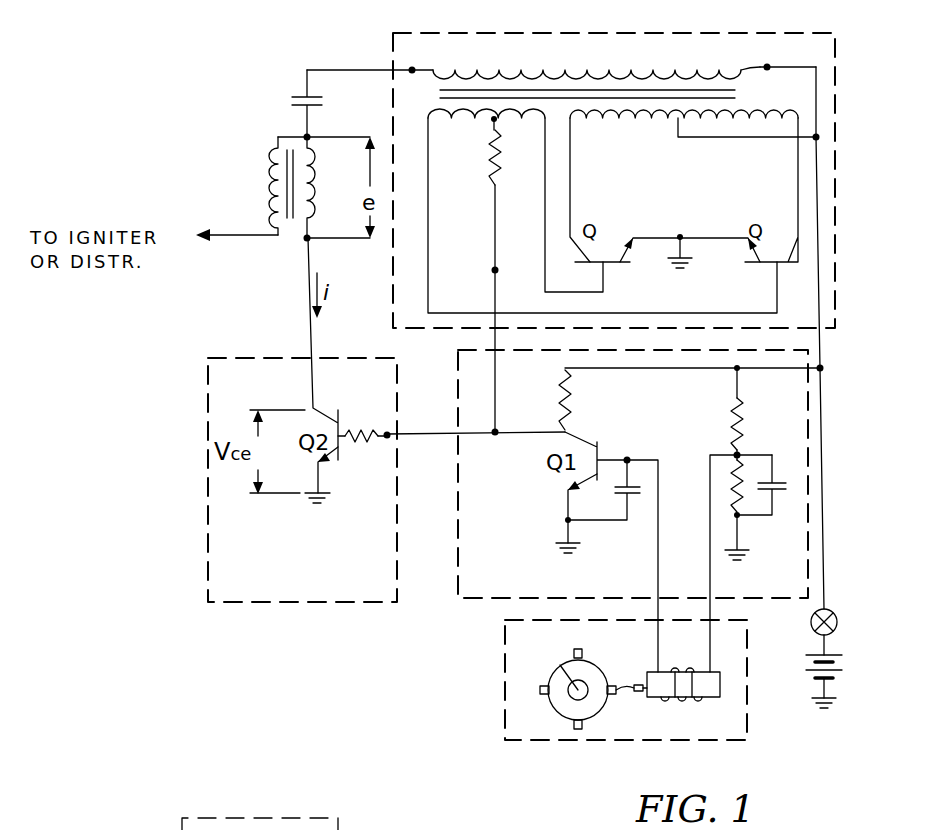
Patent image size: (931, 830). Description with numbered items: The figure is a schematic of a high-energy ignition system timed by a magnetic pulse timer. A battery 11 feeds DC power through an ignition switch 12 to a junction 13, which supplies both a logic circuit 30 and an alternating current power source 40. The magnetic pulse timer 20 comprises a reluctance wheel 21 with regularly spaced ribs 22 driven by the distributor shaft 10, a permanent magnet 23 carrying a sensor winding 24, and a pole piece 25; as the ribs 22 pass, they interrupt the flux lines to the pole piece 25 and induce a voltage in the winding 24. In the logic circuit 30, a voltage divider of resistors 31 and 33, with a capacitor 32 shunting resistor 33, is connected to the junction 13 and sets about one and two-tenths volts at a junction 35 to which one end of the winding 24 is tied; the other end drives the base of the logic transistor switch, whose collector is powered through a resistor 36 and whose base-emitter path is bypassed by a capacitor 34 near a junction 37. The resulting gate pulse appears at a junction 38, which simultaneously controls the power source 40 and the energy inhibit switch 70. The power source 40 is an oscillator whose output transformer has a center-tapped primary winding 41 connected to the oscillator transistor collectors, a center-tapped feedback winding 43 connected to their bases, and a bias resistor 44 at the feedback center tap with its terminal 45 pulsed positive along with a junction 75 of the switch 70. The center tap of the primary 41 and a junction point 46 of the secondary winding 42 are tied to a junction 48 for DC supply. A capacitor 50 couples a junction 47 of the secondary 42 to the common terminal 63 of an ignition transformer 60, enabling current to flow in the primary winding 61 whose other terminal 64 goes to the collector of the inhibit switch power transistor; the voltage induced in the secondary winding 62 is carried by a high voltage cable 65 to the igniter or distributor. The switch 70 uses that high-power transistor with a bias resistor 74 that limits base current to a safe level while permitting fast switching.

The distributor shaft 10 is at (568, 666).
The battery 11 is at (810, 656).
The ignition switch 12 is at (810, 622).
The junction 13 is at (830, 372).
The magnetic pulse timer 20 is at (762, 728).
The reluctance wheel 21 is at (562, 704).
The ribs 22 is at (584, 726).
The permanent magnet 23 is at (708, 698).
The sensor winding 24 is at (664, 700).
The pole piece 25 is at (638, 684).
The logic circuit 30 is at (450, 590).
The resistor 31 is at (734, 410).
The capacitor 32 is at (778, 480).
The resistor 33 is at (735, 486).
The capacitor 34 is at (636, 496).
The junction 35 is at (736, 454).
The resistor 36 is at (573, 400).
The junction 37 is at (627, 458).
The junction 38 is at (498, 436).
The alternating current power source 40 is at (378, 49).
The primary winding 41 is at (630, 120).
The secondary winding 42 is at (536, 76).
The feedback winding 43 is at (470, 120).
The bias resistor 44 is at (488, 168).
The terminal 45 is at (492, 270).
The junction point 46 is at (767, 65).
The junction 47 is at (420, 62).
The junction 48 is at (815, 133).
The capacitor 50 is at (292, 97).
The ignition transformer 60 is at (282, 130).
The primary winding 61 is at (314, 178).
The secondary winding 62 is at (273, 166).
The common terminal 63 is at (312, 137).
The terminal 64 is at (312, 240).
The high voltage cable 65 is at (244, 235).
The energy inhibit switch 70 is at (198, 542).
The bias resistor 74 is at (368, 406).
The junction 75 is at (387, 440).